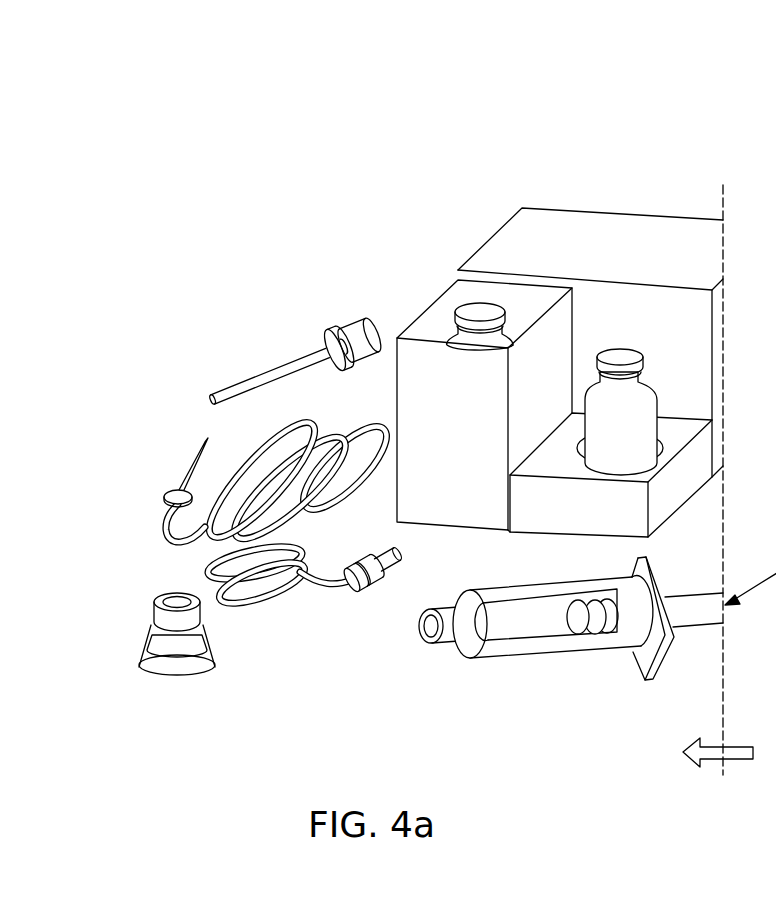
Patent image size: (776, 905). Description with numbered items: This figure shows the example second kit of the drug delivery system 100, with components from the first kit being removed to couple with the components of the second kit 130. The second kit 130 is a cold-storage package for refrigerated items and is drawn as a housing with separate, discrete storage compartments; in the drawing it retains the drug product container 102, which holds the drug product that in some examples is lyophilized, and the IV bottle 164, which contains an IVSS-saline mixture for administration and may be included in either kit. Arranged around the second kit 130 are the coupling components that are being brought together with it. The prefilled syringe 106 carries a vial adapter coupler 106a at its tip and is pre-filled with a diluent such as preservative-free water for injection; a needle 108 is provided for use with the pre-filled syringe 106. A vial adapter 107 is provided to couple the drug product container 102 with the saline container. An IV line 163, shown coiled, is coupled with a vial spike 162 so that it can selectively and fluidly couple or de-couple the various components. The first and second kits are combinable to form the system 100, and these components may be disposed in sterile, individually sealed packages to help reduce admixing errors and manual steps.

The drug delivery system 100 is at (597, 97).
The second kit 130 is at (491, 242).
The IV bottle 164 is at (456, 320).
The drug product container 102 is at (612, 452).
The needle 108 is at (218, 393).
The IV line 163 is at (164, 528).
The vial spike 162 is at (184, 483).
The vial adapter 107 is at (146, 645).
The pre-filled syringe 106 is at (580, 646).
The vial adapter coupler 106a is at (433, 647).